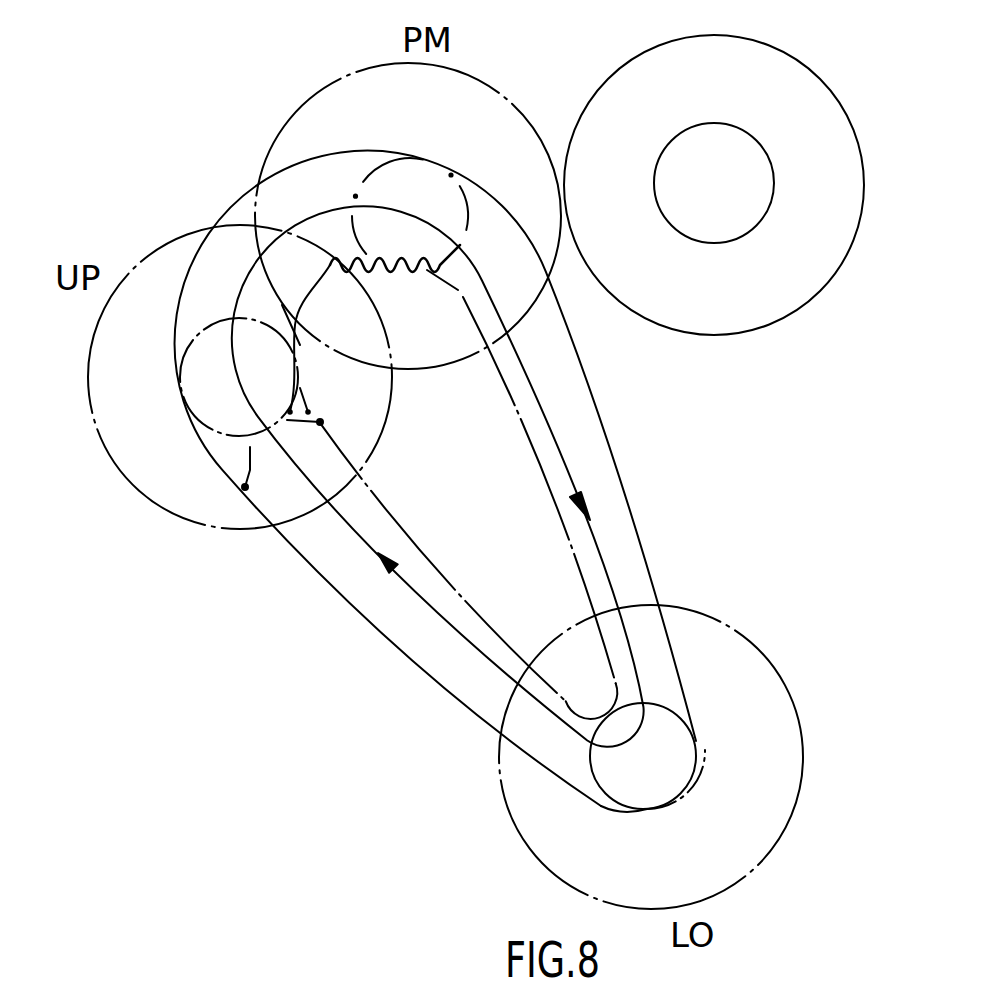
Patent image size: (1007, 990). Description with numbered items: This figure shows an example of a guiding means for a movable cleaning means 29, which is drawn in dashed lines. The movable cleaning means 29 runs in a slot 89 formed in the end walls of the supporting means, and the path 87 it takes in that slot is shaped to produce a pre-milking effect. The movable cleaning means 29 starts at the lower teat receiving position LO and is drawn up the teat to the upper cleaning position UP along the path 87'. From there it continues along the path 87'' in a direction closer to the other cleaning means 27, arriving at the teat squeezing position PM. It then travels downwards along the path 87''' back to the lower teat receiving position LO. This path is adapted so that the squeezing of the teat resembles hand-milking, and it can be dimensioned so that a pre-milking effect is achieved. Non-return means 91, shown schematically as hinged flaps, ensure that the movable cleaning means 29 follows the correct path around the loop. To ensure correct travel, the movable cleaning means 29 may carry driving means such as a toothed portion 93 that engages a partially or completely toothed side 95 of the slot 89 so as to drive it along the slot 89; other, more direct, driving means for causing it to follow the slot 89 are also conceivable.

The other cleaning means 27 is at (828, 258).
The movable cleaning means 29 is at (787, 757).
The path 87 is at (440, 481).
The path 87' is at (380, 555).
The path 87'' is at (380, 150).
The path 87''' is at (623, 520).
The slot 89 is at (628, 550).
The non-return means 91 is at (250, 468).
The toothed portion 93 is at (423, 163).
The toothed side 95 is at (330, 265).